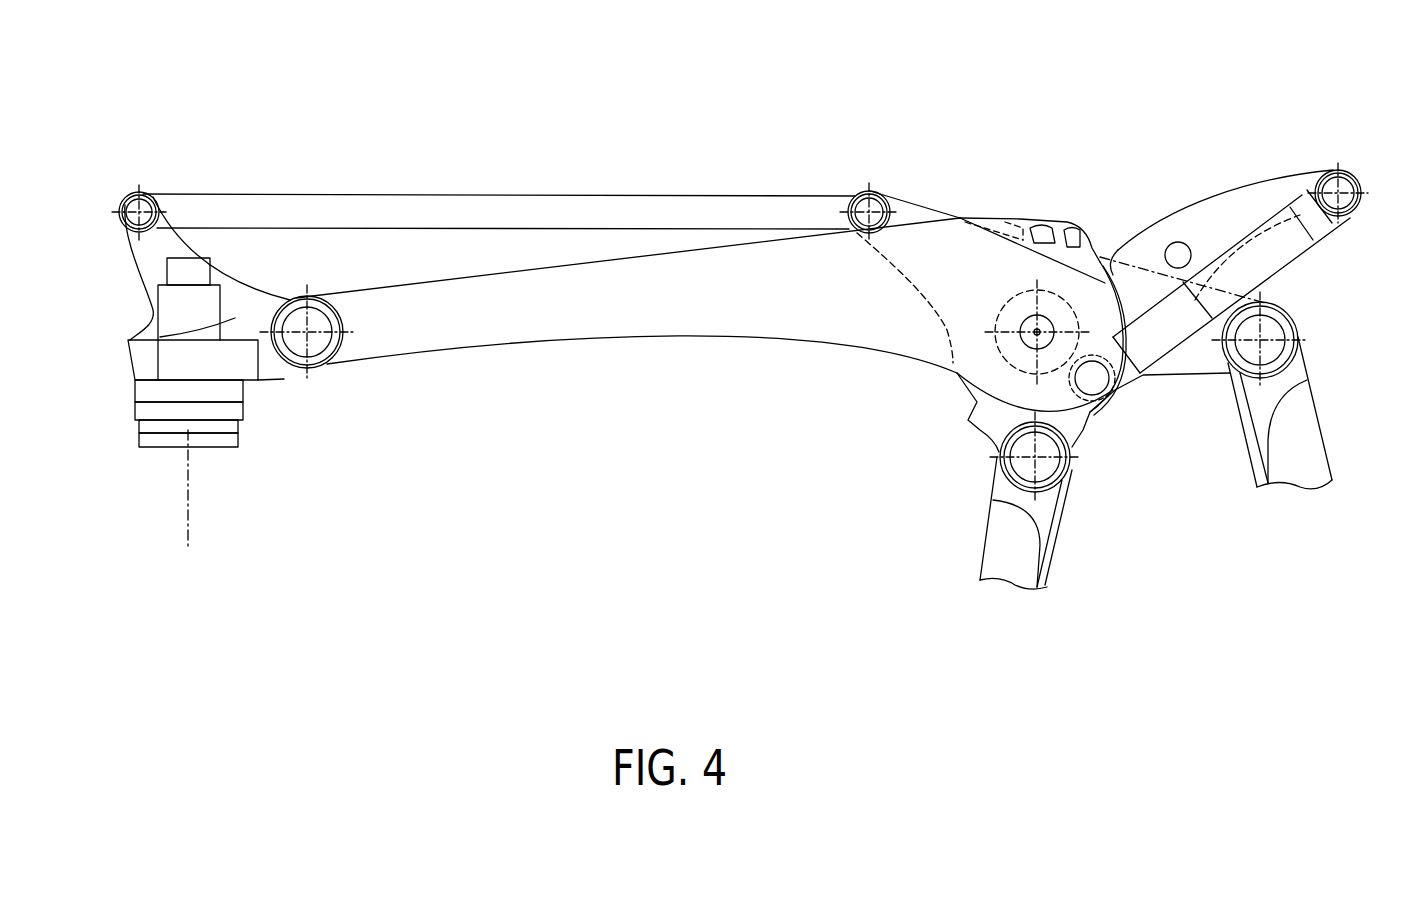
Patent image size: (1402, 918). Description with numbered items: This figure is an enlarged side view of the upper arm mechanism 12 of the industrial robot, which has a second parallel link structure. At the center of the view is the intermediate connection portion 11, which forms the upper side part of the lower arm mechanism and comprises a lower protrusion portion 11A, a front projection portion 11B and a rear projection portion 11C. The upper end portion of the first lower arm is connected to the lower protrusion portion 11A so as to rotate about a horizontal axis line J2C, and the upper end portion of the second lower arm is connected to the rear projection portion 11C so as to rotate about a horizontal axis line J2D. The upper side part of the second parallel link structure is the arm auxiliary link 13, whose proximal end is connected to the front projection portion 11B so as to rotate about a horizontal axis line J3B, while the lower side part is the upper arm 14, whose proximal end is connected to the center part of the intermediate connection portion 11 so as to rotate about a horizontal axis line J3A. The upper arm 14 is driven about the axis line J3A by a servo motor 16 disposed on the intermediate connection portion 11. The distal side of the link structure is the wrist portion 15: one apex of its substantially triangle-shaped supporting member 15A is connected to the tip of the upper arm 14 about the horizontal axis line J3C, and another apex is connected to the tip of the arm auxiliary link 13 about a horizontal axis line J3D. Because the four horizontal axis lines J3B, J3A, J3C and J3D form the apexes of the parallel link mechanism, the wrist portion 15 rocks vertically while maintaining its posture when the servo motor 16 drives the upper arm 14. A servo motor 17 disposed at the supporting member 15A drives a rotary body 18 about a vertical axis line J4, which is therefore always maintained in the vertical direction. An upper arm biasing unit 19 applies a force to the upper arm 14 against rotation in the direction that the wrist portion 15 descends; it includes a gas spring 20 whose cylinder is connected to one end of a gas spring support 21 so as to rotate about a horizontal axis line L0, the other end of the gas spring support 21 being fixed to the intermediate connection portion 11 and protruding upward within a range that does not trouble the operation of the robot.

The upper arm mechanism 12 is at (618, 92).
The arm auxiliary link 13 is at (508, 196).
The upper arm 14 is at (602, 338).
The wrist portion 15 is at (113, 336).
The supporting member 15A is at (142, 257).
The servo motor 17 is at (213, 293).
The rotary body 18 is at (210, 447).
The vertical axis line J4 is at (188, 525).
The horizontal axis line J3D is at (126, 200).
The horizontal axis line J3C is at (313, 338).
The horizontal axis line J3B is at (852, 194).
The horizontal axis line J3A is at (1037, 332).
The intermediate connection portion 11 is at (1097, 260).
The lower protrusion portion 11A is at (1073, 428).
The front projection portion 11B is at (917, 210).
The rear projection portion 11C is at (1197, 363).
The servo motor 16 is at (1007, 307).
The horizontal axis line J2C is at (1040, 463).
The horizontal axis line J2D is at (1267, 333).
The upper arm biasing unit 19 is at (1299, 122).
The gas spring 20 is at (1293, 248).
The gas spring support 21 is at (1205, 198).
The horizontal axis line L0 is at (1357, 172).